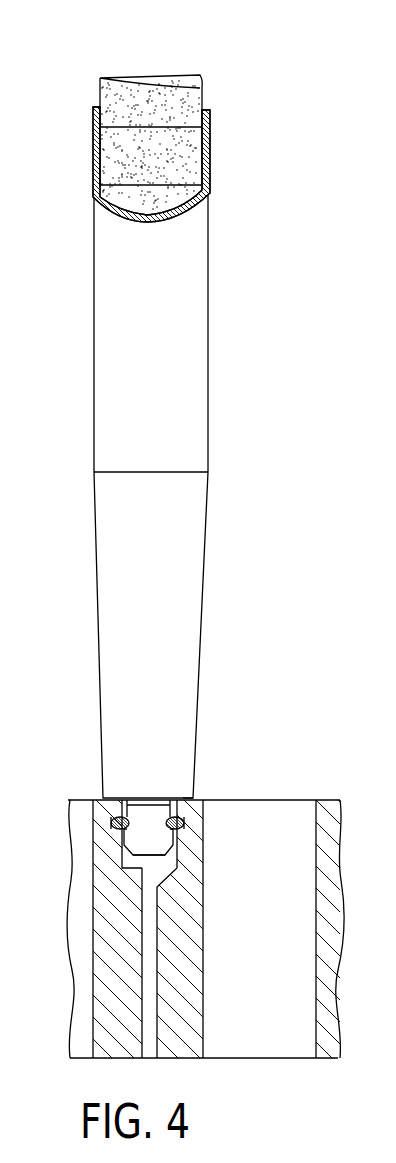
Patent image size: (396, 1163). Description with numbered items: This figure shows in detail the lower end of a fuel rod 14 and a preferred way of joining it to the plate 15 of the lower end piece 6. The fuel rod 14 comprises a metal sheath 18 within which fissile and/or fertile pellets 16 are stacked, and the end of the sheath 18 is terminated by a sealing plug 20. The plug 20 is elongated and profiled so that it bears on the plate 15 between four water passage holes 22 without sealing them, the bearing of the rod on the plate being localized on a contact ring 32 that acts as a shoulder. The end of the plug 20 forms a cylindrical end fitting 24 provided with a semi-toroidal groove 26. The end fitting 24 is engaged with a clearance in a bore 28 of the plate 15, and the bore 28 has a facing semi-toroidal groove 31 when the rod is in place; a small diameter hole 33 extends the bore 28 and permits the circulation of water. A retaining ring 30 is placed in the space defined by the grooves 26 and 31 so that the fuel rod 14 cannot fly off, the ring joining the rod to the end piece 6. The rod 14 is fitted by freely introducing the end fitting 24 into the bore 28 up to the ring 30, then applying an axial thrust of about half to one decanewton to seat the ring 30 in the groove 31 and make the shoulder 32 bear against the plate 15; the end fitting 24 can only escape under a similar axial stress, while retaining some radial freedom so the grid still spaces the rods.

The fuel rod 14 is at (184, 403).
The fissile and/or fertile pellets 16 is at (165, 103).
The metal sheath 18 is at (205, 165).
The sealing plug 20 is at (187, 447).
The lower end piece 6 is at (206, 898).
The plate 15 is at (325, 822).
The water passage hole 22 is at (303, 1042).
The cylindrical end fitting 24 is at (157, 886).
The semi-toroidal groove 26 is at (150, 820).
The bore 28 is at (143, 869).
The retaining ring 30 is at (107, 822).
The semi-toroidal groove 31 is at (177, 828).
The contact ring 32 is at (186, 796).
The small diameter hole 33 is at (147, 1005).